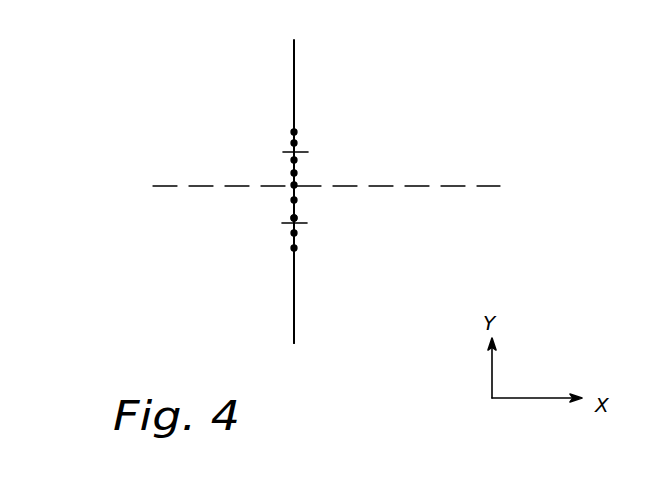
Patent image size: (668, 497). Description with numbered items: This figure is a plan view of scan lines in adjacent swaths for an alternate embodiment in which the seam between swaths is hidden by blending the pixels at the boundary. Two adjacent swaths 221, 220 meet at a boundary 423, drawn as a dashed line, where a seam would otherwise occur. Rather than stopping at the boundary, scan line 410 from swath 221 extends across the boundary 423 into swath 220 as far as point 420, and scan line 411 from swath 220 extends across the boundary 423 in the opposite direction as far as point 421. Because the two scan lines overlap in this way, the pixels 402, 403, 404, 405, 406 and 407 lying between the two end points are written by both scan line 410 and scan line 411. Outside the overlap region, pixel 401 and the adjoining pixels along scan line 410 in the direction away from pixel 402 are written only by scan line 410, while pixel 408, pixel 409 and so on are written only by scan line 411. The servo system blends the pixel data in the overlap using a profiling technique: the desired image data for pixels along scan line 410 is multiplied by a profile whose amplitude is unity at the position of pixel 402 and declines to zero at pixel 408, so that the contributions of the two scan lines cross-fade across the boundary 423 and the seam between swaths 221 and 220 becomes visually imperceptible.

The pixel 401 is at (294, 143).
The pixel 402 is at (294, 160).
The pixel 403 is at (294, 173).
The pixel 404 is at (294, 185).
The pixel 405 is at (294, 200).
The pixel 406 is at (294, 218).
The pixel 407 is at (282, 223).
The pixel 408 is at (294, 233).
The pixel 409 is at (294, 248).
The scan line 410 is at (294, 100).
The scan line 411 is at (294, 328).
The point 420 is at (294, 218).
The point 421 is at (283, 152).
The boundary 423 is at (500, 188).
The swath 220 is at (510, 248).
The swath 221 is at (505, 100).